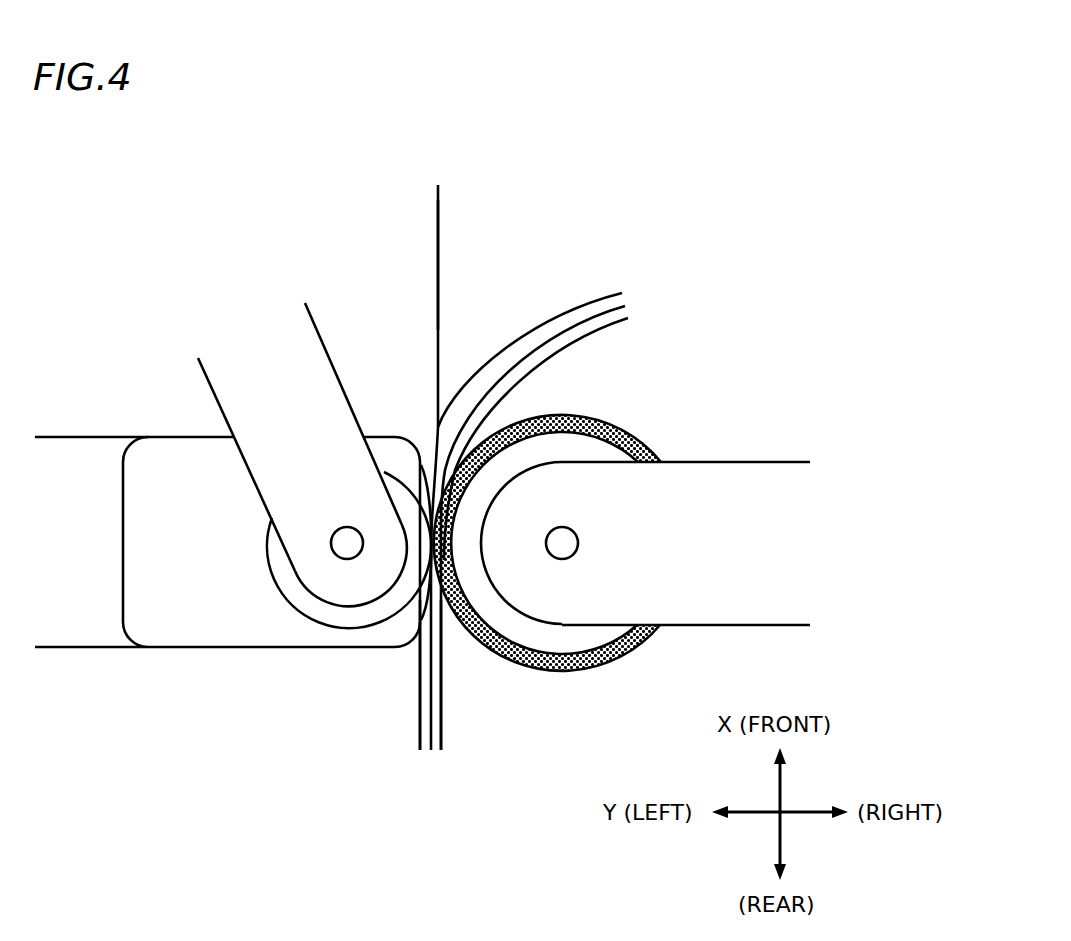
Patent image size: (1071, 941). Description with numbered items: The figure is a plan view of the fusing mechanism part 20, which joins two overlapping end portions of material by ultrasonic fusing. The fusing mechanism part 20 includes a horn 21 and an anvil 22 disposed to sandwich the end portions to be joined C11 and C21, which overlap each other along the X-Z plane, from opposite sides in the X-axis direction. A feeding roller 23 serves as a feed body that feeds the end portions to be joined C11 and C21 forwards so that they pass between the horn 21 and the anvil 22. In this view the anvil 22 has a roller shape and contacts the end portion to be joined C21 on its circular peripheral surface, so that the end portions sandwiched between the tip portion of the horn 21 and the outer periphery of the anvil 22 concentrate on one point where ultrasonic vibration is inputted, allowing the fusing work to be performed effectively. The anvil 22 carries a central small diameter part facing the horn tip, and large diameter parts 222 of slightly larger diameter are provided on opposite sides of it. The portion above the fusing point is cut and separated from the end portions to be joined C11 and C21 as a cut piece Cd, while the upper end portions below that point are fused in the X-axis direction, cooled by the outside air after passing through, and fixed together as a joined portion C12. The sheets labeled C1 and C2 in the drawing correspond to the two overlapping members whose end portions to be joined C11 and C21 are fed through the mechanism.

The fusing mechanism part 20 is at (248, 204).
The horn 21 is at (195, 650).
The anvil 22 is at (697, 320).
The feeding roller 23 is at (346, 626).
The large diameter part 222 is at (553, 673).
The first sheet C1 is at (396, 222).
The end portion to be joined C11 is at (420, 723).
The joined portion C12 is at (436, 282).
The second sheet C2 is at (475, 222).
The end portion to be joined C21 is at (445, 725).
The cut piece Cd is at (596, 296).